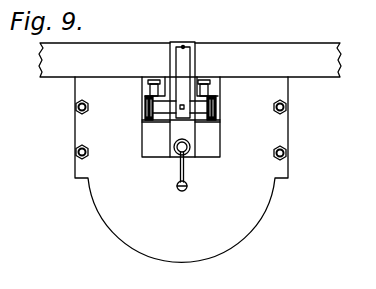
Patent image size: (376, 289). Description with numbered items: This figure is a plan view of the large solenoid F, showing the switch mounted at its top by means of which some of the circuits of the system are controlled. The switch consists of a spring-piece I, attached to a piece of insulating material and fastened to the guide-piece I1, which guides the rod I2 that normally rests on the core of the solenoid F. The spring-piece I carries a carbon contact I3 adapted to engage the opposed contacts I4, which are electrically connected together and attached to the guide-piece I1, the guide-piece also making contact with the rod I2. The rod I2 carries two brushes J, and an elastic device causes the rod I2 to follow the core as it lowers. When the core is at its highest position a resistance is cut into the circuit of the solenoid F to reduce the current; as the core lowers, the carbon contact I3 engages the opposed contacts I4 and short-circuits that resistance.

The solenoid F is at (241, 238).
The spring-piece I is at (181, 63).
The guide-piece I1 is at (190, 133).
The rod I2 is at (189, 157).
The carbon contact I3 is at (219, 114).
The opposed contacts I4 is at (195, 118).
The brushes J is at (150, 88).